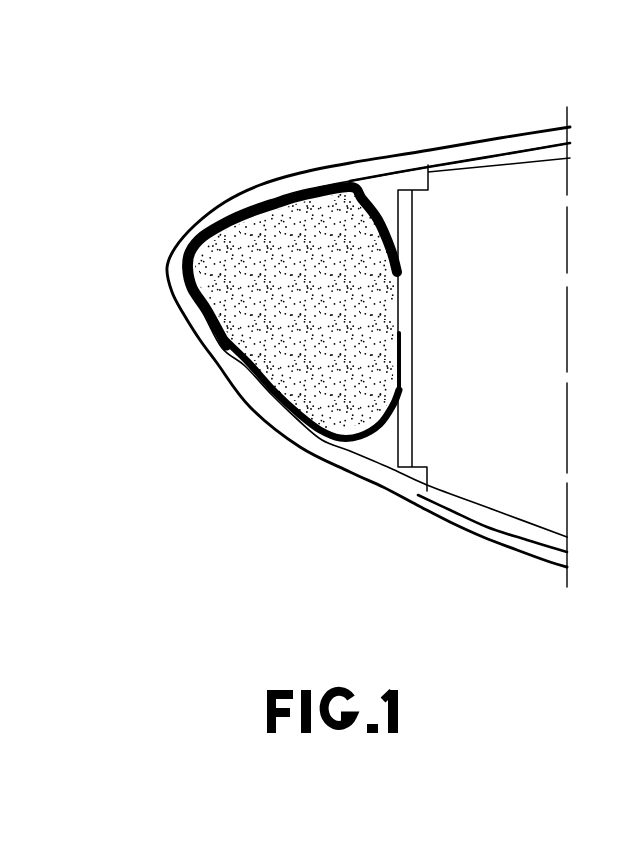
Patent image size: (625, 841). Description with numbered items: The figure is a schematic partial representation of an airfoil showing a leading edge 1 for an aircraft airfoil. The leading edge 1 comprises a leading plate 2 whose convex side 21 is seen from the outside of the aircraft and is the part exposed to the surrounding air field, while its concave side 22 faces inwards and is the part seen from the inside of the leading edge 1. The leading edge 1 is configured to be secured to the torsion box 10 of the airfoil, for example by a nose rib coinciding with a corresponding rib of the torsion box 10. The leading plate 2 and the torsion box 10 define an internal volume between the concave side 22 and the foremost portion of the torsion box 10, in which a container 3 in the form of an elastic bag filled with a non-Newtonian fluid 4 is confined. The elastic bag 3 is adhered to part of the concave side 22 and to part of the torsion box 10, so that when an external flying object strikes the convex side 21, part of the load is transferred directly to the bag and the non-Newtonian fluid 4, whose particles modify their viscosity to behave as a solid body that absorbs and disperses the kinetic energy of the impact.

The leading edge 1 is at (160, 125).
The leading plate 2 is at (170, 246).
The container 3 is at (380, 215).
The non-Newtonian fluid 4 is at (285, 233).
The torsion box 10 is at (485, 468).
The convex side 21 is at (242, 411).
The concave side 22 is at (214, 352).